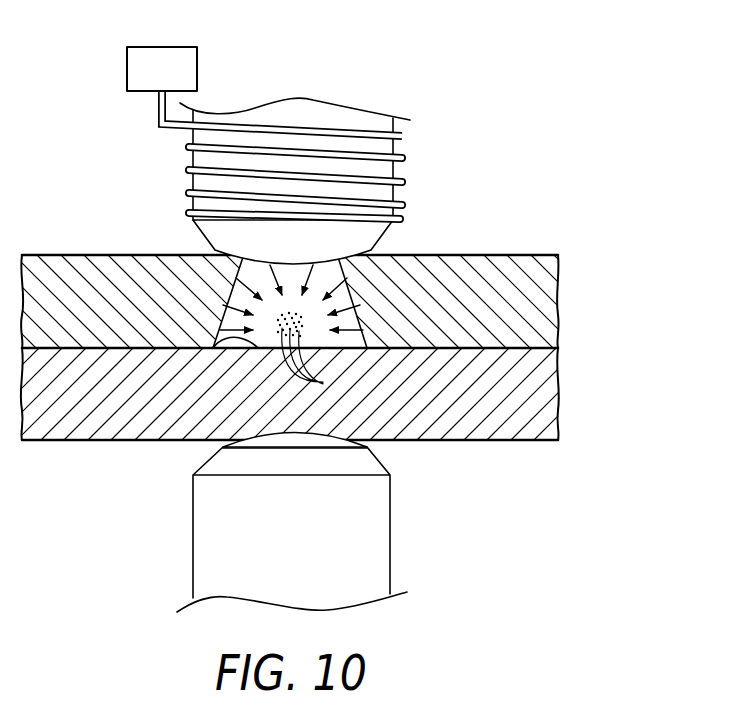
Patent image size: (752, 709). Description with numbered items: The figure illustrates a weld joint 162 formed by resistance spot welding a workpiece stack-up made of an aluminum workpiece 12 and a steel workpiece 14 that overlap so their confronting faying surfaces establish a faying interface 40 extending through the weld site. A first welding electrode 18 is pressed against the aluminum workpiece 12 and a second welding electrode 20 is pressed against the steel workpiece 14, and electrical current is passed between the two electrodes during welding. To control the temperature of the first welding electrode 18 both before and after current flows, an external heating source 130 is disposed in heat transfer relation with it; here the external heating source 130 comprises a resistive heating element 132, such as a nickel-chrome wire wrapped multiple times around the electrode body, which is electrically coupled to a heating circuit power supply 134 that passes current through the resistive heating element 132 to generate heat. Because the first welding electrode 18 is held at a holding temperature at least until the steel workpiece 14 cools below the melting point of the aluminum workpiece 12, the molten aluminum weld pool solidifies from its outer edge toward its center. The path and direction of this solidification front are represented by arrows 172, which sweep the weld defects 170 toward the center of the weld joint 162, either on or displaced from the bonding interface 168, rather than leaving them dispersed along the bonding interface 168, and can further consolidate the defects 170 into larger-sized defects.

The aluminum workpiece 12 is at (540, 305).
The steel workpiece 14 is at (542, 397).
The first welding electrode 18 is at (160, 155).
The second welding electrode 20 is at (180, 548).
The faying interface 40 is at (137, 343).
The external heating source 130 is at (341, 150).
The resistive heating element 132 is at (377, 157).
The heating circuit power supply 134 is at (182, 82).
The weld joint 162 is at (370, 330).
The bonding interface 168 is at (227, 350).
The weld defects 170 is at (321, 353).
The arrows 172 is at (222, 330).